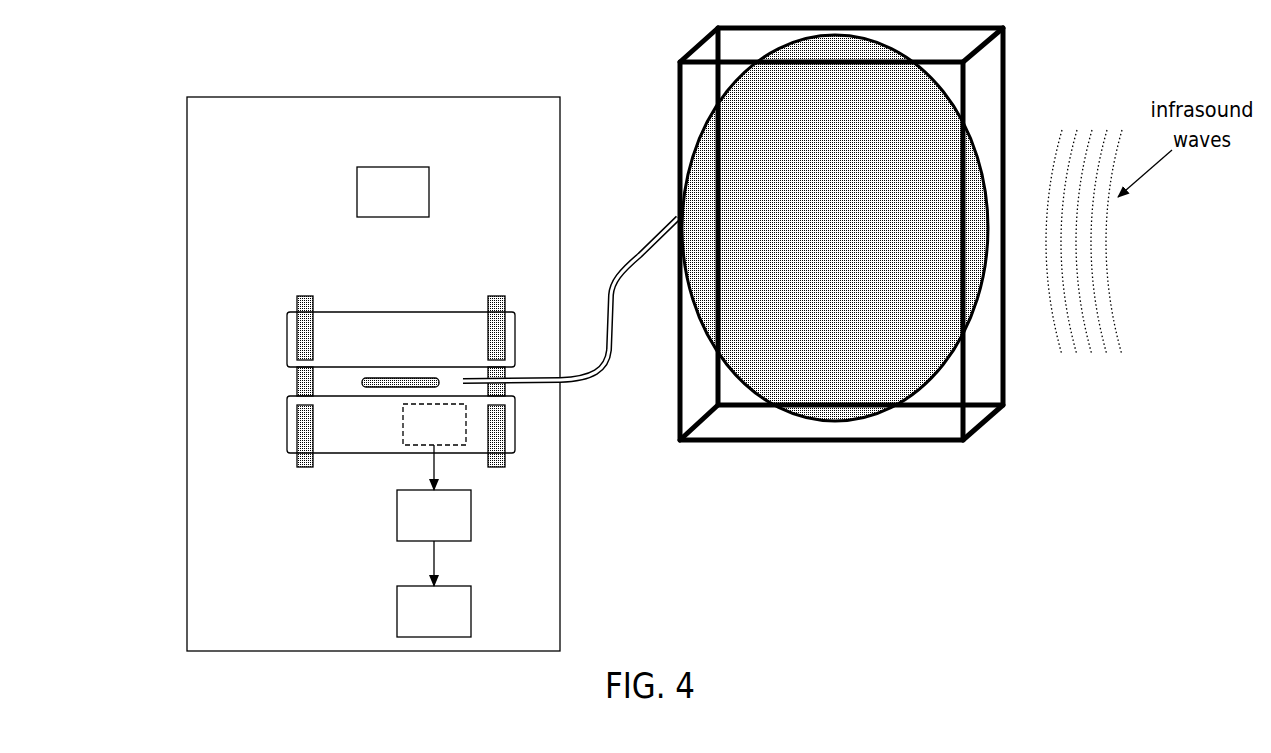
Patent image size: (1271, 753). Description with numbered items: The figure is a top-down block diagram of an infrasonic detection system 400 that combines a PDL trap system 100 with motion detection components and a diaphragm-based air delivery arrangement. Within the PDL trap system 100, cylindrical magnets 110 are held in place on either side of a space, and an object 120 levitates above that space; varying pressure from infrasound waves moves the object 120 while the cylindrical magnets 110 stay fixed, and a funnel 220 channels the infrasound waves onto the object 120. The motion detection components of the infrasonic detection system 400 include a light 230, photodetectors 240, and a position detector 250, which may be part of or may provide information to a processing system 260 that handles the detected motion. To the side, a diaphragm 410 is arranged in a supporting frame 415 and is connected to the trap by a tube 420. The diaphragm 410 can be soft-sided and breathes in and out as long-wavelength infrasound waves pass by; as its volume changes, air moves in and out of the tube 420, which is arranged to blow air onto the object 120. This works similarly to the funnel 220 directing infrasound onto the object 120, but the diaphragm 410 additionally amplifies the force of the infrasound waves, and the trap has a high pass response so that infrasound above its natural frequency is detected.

The PDL trap system 100 is at (360, 360).
The cylindrical magnets 110 is at (393, 322).
The object 120 is at (375, 388).
The funnel 220 is at (298, 305).
The light 230 is at (393, 192).
The photodetectors 240 is at (434, 424).
The position detector 250 is at (434, 515).
The processing system 260 is at (434, 611).
The infrasonic detection system 400 is at (546, 135).
The diaphragm 410 is at (770, 128).
The supporting frame 415 is at (799, 229).
The tube 420 is at (615, 332).